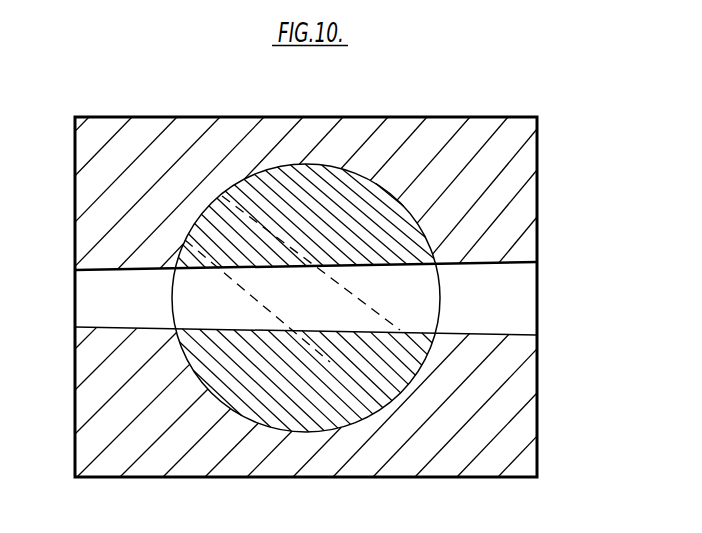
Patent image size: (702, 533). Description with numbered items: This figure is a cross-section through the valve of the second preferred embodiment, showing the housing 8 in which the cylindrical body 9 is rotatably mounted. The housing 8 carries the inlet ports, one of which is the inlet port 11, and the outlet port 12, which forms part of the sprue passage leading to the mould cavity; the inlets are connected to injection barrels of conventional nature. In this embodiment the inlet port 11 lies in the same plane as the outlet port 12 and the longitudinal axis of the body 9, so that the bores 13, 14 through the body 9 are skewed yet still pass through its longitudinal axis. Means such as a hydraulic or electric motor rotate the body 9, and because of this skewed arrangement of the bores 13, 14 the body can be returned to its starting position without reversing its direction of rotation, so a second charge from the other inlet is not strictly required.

The housing 8 is at (518, 176).
The cylindrical body 9 is at (313, 180).
The inlet port 11 is at (520, 277).
The outlet port 12 is at (97, 295).
The bore 13 is at (330, 362).
The bore 14 is at (424, 318).